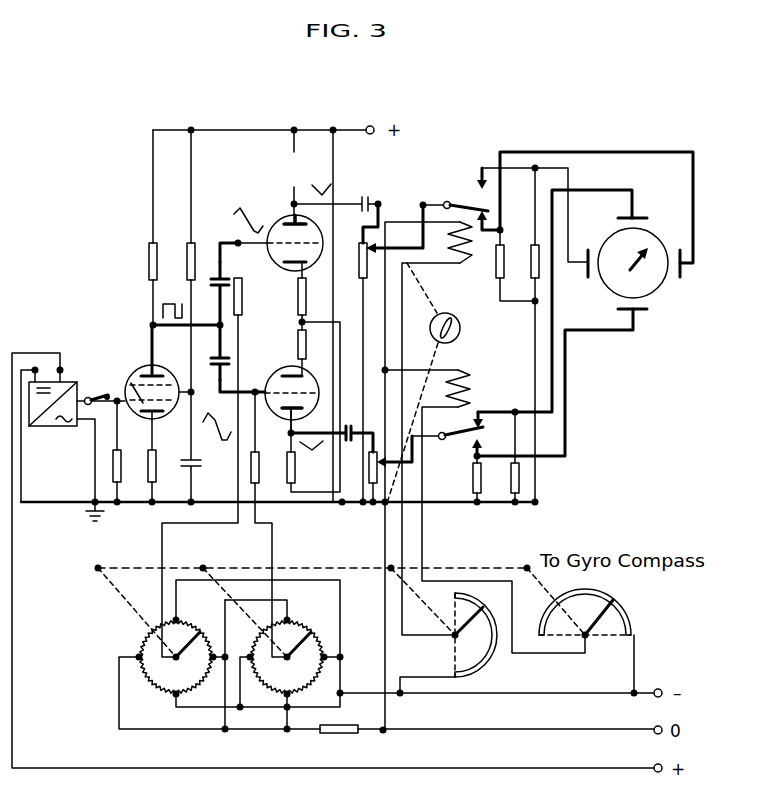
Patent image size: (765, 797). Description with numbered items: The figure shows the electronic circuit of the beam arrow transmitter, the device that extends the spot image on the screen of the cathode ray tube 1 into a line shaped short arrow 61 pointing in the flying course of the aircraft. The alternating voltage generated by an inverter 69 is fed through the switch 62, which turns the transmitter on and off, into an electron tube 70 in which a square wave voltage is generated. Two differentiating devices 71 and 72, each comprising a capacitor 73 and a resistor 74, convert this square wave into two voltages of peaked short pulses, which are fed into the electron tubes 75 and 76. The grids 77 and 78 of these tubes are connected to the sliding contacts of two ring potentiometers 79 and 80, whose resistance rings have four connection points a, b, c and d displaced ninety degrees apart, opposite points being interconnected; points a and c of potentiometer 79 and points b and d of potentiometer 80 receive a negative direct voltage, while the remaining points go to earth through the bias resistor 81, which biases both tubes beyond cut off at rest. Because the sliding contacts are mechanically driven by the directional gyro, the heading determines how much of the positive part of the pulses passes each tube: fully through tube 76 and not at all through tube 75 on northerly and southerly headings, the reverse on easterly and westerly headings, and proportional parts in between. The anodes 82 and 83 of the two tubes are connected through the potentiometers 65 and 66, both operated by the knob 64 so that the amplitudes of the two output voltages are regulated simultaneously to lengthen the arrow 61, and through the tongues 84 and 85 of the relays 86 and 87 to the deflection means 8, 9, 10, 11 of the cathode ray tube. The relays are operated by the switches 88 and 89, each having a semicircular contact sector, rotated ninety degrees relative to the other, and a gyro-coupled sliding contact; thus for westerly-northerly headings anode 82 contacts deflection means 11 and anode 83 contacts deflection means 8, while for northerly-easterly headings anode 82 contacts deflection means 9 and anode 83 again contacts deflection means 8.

The cathode ray tube 1 is at (655, 236).
The deflection means 8 is at (632, 217).
The deflection means 9 is at (680, 272).
The deflection means 10 is at (636, 313).
The deflection means 11 is at (586, 268).
The beam arrow 61 is at (640, 262).
The switch 62 is at (100, 393).
The second knob 64 is at (462, 328).
The potentiometer 65 is at (368, 263).
The potentiometer 66 is at (380, 468).
The inverter 69 is at (48, 420).
The electron tube 70 is at (133, 375).
The differentiating device 71 is at (216, 240).
The differentiating device 72 is at (232, 385).
The capacitor 73 is at (218, 282).
The resistor 74 is at (241, 296).
The electron tube 75 is at (320, 260).
The electron tube 76 is at (275, 369).
The grid 77 is at (298, 242).
The grid 78 is at (296, 388).
The ring potentiometer 79 is at (152, 685).
The ring potentiometer 80 is at (265, 687).
The bias resistor 81 is at (337, 733).
The anode 82 is at (290, 222).
The anode 83 is at (289, 416).
The tongue 84 is at (462, 203).
The tongue 85 is at (463, 438).
The relay 86 is at (457, 262).
The relay 87 is at (462, 375).
The switch 88 is at (473, 668).
The switch 89 is at (562, 604).